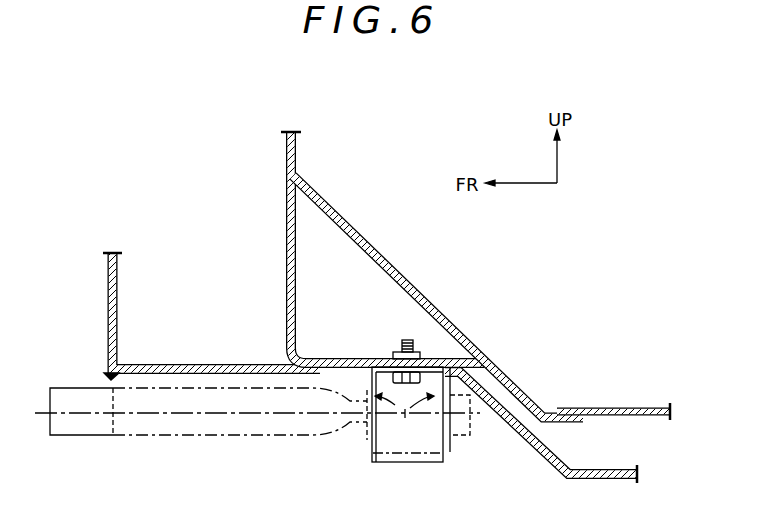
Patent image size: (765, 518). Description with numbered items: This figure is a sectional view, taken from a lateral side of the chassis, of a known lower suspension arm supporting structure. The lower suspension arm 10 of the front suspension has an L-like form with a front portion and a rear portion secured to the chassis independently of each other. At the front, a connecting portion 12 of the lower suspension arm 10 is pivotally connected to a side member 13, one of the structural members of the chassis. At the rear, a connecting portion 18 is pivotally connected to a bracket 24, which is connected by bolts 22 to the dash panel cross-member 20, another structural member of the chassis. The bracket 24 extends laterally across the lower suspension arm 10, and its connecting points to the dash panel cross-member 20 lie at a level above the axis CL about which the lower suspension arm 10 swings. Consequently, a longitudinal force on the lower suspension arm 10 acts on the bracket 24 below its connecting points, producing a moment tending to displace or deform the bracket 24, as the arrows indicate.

The lower suspension arm 10 is at (200, 437).
The connecting portion 12 is at (77, 437).
The side member 13 is at (204, 365).
The connecting portion 18 is at (459, 444).
The dash panel cross-member 20 is at (346, 359).
The bolt 22 is at (404, 383).
The bracket 24 is at (418, 463).
The axis CL is at (172, 415).